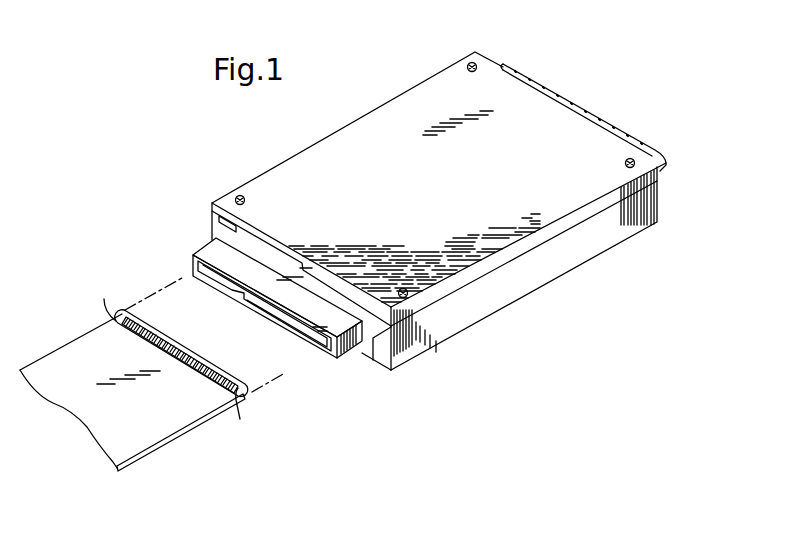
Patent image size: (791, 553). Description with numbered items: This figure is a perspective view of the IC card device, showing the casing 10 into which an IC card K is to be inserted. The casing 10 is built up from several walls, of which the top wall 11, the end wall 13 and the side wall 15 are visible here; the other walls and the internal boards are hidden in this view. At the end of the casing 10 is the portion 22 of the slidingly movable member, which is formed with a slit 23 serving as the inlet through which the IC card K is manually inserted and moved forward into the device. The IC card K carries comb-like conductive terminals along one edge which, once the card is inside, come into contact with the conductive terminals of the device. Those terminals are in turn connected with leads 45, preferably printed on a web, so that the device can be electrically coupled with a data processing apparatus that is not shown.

The casing 10 is at (529, 296).
The top wall 11 is at (370, 120).
The end wall 13 is at (387, 356).
The side wall 15 is at (493, 300).
The portion formed with a slit 22 is at (354, 326).
The slit 23 is at (290, 314).
The leads 45 is at (597, 117).
The IC card K is at (173, 439).